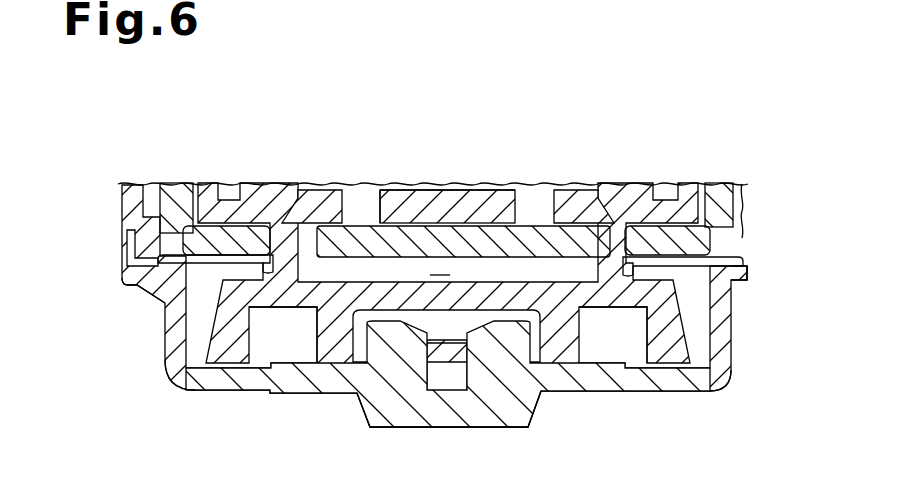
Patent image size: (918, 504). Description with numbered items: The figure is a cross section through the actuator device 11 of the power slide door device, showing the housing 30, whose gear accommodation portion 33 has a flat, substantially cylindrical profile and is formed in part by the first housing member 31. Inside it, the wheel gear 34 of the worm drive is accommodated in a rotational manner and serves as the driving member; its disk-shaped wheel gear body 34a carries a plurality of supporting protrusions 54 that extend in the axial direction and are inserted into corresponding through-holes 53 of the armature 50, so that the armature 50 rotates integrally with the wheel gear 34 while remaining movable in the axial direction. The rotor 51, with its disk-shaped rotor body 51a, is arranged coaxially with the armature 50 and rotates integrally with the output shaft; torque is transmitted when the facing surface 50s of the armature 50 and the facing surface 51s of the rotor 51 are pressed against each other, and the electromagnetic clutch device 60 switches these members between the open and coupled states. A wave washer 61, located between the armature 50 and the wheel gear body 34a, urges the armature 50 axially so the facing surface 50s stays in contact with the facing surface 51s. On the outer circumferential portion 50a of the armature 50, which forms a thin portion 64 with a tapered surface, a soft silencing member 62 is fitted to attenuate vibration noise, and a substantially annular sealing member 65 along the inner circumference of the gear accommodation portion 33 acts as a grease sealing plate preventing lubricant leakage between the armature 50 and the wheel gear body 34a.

The actuator device 11 is at (69, 109).
The housing 30 is at (735, 378).
The gear accommodation portion 33 is at (782, 387).
The first housing member 31 is at (248, 394).
The wheel gear 34 is at (193, 383).
The wheel gear body 34a is at (445, 297).
The armature 50 is at (532, 226).
The outer circumferential portion 50a is at (748, 270).
The facing surface 50s is at (552, 290).
The rotor 51 is at (424, 190).
The rotor body 51a is at (452, 164).
The facing surface 51s is at (362, 280).
The through-hole 53 is at (313, 207).
The supporting protrusion 54 is at (283, 235).
The electromagnetic clutch device 60 is at (580, 330).
The wave washer 61 is at (315, 300).
The silencing member 62 is at (748, 250).
The thin portion 64 is at (803, 290).
The sealing member 65 is at (173, 283).